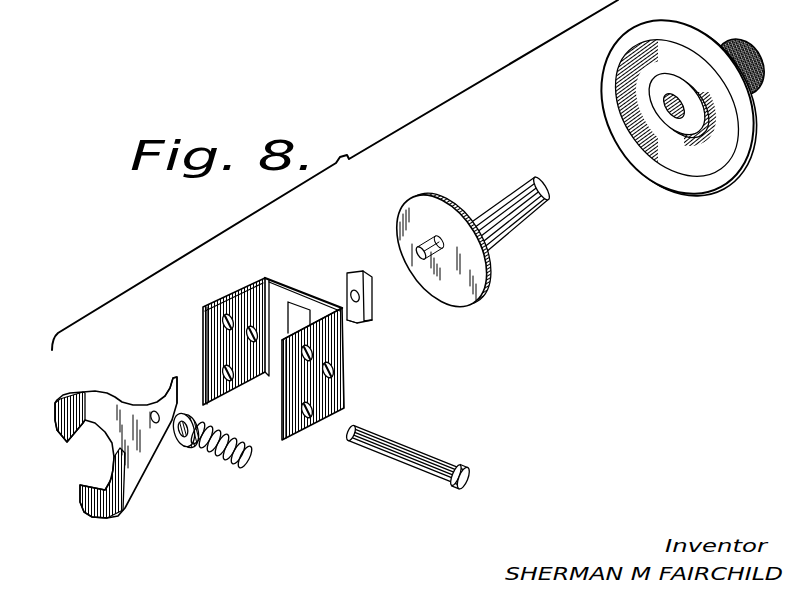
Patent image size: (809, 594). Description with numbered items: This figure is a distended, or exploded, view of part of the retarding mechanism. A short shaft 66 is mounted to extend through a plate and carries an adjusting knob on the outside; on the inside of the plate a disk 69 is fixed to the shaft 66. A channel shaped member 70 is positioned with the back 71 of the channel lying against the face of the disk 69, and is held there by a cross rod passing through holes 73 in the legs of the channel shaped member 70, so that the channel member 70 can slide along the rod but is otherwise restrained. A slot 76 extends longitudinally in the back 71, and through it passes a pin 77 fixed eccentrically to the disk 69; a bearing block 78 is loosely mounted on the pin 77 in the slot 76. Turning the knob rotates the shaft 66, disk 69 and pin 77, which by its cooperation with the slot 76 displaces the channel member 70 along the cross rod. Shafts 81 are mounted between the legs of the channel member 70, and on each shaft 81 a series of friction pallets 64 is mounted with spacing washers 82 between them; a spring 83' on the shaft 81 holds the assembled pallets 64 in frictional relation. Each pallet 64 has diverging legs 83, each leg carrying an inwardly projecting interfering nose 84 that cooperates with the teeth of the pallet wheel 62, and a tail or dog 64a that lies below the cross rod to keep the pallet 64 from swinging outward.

The pallet wheel 62 is at (730, 38).
The short shaft 66 is at (528, 215).
The disk 69 is at (440, 213).
The pin 77 is at (418, 248).
The channel shaped member 70 is at (285, 340).
The back of the channel 71 is at (275, 300).
The slot 76 is at (297, 310).
The holes 73 is at (250, 337).
The bearing block 78 is at (372, 295).
The shafts 81 is at (422, 450).
The spacing washers 82 is at (179, 450).
The spring 83' is at (225, 467).
The diverging legs 83 is at (118, 453).
The interfering nose 84 is at (67, 442).
The friction pallet 64 is at (135, 467).
The tail or dog 64a is at (151, 372).